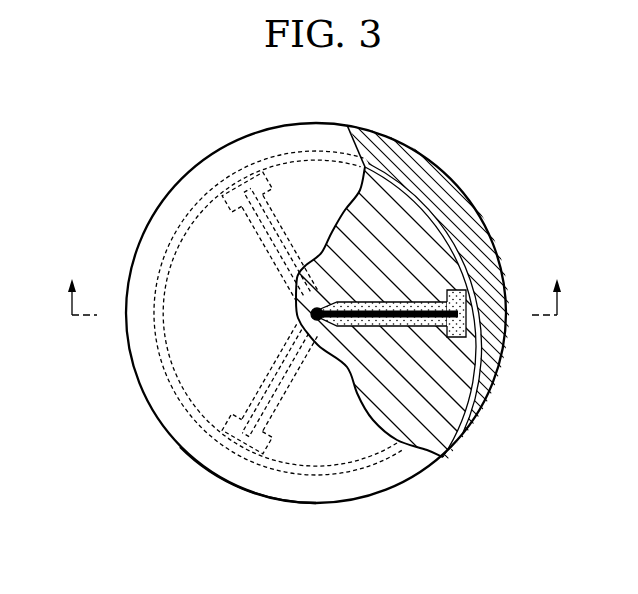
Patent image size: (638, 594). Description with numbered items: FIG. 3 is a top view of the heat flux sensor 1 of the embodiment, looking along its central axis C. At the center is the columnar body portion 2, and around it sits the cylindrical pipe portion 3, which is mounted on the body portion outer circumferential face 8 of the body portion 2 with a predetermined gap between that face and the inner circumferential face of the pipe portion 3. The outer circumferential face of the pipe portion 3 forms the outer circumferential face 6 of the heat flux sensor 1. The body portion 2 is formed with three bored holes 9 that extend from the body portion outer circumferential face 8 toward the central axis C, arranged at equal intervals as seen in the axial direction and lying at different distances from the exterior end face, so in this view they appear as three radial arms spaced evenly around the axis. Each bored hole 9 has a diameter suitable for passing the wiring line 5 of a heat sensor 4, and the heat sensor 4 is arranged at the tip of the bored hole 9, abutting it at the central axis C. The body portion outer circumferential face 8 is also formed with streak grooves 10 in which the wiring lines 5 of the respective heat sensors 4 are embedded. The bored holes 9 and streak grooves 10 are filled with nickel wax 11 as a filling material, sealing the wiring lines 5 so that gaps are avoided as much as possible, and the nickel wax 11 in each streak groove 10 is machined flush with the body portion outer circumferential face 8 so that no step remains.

The heat flux sensor 1 is at (554, 151).
The body portion 2 is at (168, 245).
The pipe portion 3 is at (160, 407).
The heat sensor 4 is at (300, 317).
The wiring line 5 is at (395, 304).
The outer circumferential face 6 is at (393, 488).
The body portion outer circumferential face 8 is at (470, 410).
The bored hole 9 is at (401, 310).
The streak groove 10 is at (463, 323).
The nickel wax 11 is at (398, 177).